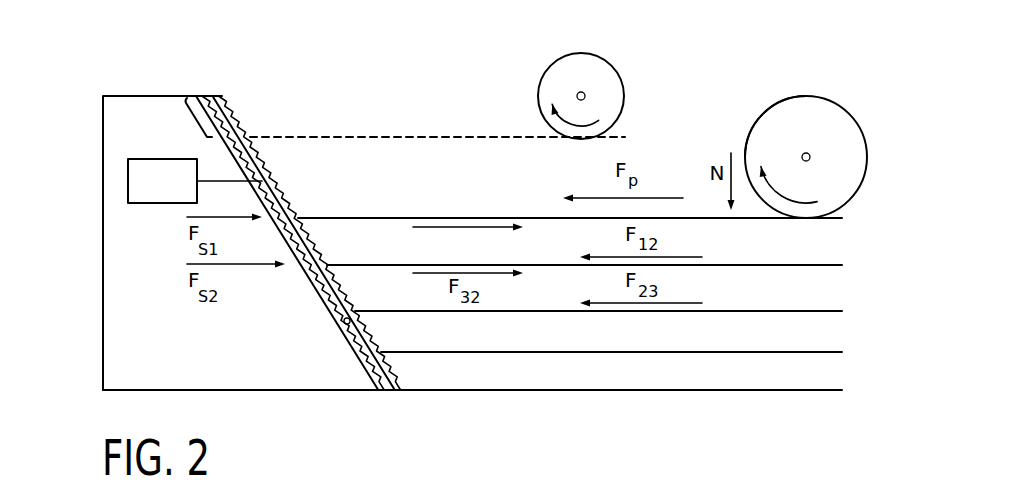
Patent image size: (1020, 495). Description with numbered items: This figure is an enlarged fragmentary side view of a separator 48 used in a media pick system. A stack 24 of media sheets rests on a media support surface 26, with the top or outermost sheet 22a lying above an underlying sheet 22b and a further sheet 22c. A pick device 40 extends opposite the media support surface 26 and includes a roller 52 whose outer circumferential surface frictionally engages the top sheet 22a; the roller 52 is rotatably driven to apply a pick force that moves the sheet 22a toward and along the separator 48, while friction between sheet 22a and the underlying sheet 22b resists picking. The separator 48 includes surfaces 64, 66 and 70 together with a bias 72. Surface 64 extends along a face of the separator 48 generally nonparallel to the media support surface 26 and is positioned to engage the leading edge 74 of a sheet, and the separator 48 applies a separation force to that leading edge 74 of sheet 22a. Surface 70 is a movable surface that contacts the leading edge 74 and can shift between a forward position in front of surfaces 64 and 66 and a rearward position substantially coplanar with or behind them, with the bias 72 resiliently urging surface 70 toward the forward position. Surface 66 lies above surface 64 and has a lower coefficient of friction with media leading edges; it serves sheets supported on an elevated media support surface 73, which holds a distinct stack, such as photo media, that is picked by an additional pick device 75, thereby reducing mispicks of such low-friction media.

The separator 48 is at (163, 83).
The surface 66 is at (196, 114).
The bias 72 is at (128, 181).
The elevated media support surface 73 is at (402, 133).
The movable surface 70 is at (283, 193).
The leading edge 74 is at (302, 218).
The surface 64 is at (344, 321).
The stack 24 is at (413, 215).
The top sheet 22a is at (507, 217).
The underlying sheet 22b is at (742, 263).
The sheet 22c is at (742, 310).
The media support surface 26 is at (492, 392).
The additional pick device 75 is at (553, 73).
The pick device 40 is at (823, 92).
The roller 52 is at (758, 128).